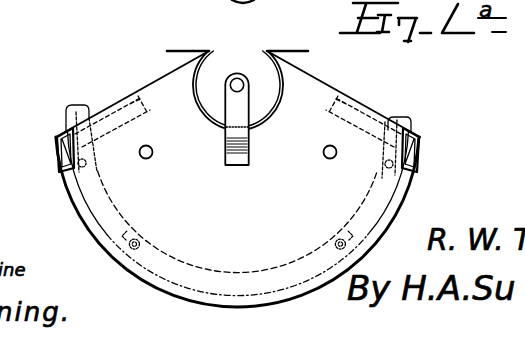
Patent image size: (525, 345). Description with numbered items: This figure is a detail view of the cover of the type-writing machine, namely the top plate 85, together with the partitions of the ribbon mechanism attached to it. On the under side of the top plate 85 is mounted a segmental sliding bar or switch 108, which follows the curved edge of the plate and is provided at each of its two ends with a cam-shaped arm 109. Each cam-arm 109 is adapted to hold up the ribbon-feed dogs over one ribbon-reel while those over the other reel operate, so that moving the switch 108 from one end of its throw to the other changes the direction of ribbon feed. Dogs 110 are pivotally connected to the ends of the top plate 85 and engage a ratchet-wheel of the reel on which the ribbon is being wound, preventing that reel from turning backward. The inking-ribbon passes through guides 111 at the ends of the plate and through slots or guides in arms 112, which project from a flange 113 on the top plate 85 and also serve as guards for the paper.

The top plate 85 is at (238, 173).
The segmental sliding bar or switch 108 is at (384, 210).
The cam-shaped arms 109 is at (77, 115).
The dogs 110 is at (113, 129).
The guides 111 is at (61, 168).
The arms 112 is at (237, 42).
The flange 113 is at (202, 120).